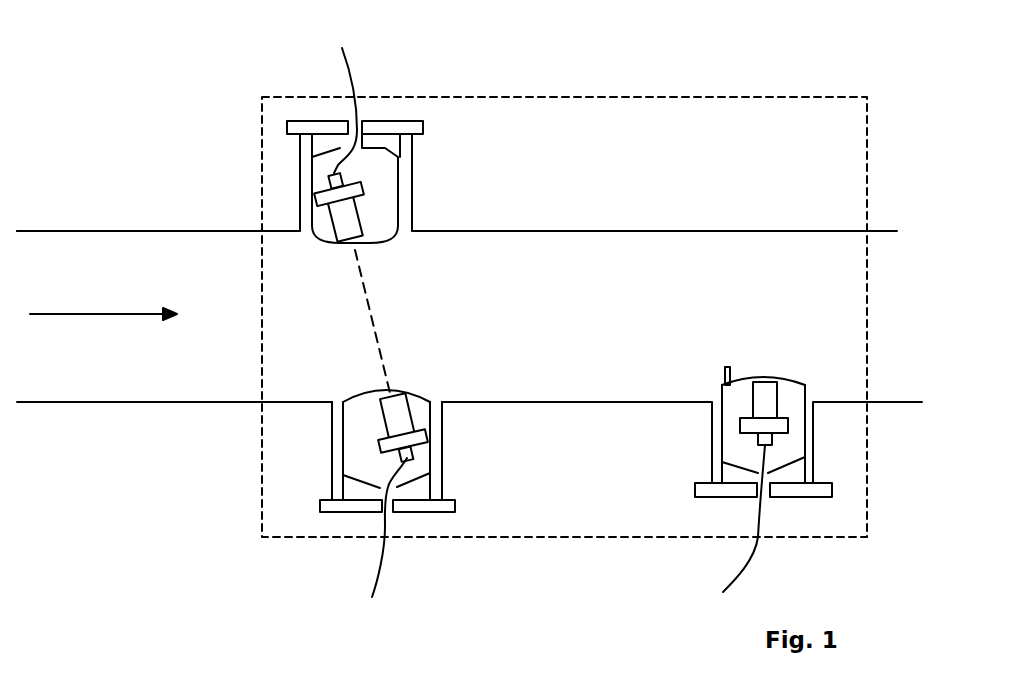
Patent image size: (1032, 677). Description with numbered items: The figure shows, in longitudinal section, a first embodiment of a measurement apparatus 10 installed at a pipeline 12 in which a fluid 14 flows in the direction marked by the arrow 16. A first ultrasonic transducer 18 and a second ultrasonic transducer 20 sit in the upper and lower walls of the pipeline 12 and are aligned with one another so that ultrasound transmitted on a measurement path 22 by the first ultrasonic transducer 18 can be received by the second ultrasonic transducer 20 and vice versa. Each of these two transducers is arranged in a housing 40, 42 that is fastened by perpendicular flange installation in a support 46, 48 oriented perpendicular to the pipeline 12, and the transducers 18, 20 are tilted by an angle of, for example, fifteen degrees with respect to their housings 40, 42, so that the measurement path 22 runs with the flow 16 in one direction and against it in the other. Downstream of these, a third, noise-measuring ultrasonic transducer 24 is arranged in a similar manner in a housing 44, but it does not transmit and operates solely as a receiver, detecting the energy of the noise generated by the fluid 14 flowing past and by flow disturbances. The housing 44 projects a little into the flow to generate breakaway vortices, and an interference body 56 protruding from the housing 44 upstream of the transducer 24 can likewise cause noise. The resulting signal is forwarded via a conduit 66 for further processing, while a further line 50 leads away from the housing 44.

The measurement apparatus 10 is at (627, 97).
The pipeline 12 is at (728, 230).
The fluid 14 is at (115, 268).
The arrow 16 is at (100, 315).
The first ultrasonic transducer 18 is at (343, 213).
The second ultrasonic transducer 20 is at (400, 425).
The measurement path 22 is at (375, 332).
The third ultrasonic transducer 24 is at (778, 400).
The housing 40 is at (400, 197).
The housing 42 is at (347, 447).
The housing 44 is at (808, 450).
The support 46 is at (300, 150).
The support 48 is at (445, 478).
The cable 50 is at (712, 470).
The interference body 56 is at (723, 380).
The conduit 66 is at (750, 553).